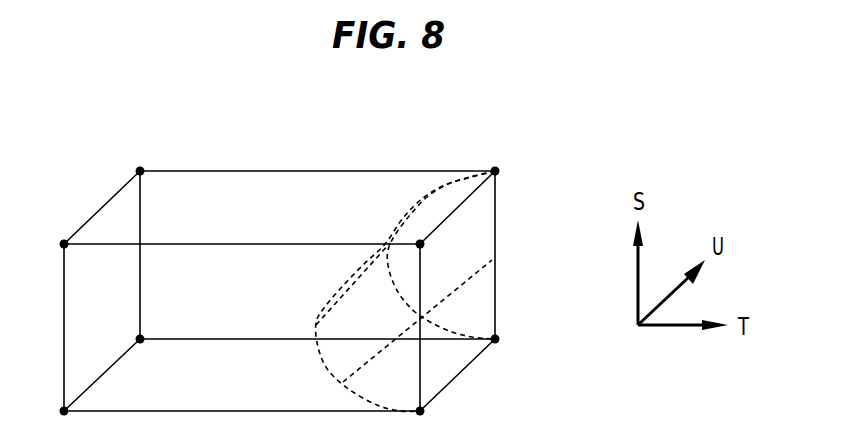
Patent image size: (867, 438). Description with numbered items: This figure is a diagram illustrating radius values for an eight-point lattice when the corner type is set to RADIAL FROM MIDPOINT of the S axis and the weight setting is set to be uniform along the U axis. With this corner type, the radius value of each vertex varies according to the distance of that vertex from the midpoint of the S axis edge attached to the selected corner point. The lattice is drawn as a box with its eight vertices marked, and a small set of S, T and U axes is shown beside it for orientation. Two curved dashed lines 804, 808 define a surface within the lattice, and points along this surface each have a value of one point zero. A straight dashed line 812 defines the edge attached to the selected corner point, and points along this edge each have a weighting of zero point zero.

The dashed line 804 is at (444, 181).
The dashed line 808 is at (320, 303).
The dashed line 812 is at (465, 289).